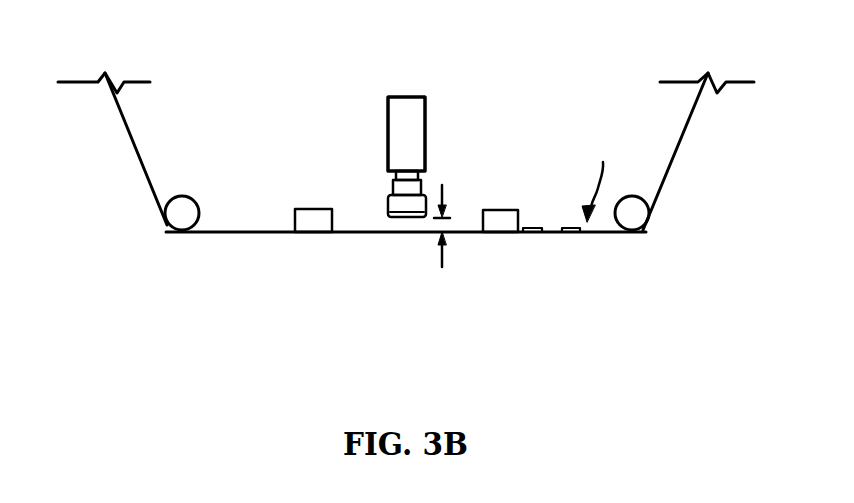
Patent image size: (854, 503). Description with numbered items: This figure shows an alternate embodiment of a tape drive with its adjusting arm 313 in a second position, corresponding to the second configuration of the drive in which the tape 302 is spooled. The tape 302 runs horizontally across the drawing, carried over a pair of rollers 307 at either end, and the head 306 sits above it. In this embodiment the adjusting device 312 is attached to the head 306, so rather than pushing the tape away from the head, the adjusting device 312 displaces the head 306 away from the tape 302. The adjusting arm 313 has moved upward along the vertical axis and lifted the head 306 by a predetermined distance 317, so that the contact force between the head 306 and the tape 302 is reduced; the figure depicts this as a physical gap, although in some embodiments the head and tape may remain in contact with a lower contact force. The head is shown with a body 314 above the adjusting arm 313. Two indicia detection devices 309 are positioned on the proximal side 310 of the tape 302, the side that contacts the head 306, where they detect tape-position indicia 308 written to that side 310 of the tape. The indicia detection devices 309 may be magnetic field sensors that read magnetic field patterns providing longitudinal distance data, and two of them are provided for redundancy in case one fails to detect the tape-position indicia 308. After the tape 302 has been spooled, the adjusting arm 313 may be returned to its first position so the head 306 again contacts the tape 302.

The tape 302 is at (123, 133).
The head 306 is at (390, 196).
The roller 307 is at (182, 222).
The tape-position indicia 308 is at (537, 232).
The indicia detection devices 309 is at (300, 209).
The proximal side 310 is at (605, 180).
The adjusting device 312 is at (370, 120).
The adjusting arm 313 is at (421, 188).
The printhead body 314 is at (428, 108).
The predetermined distance 317 is at (455, 260).